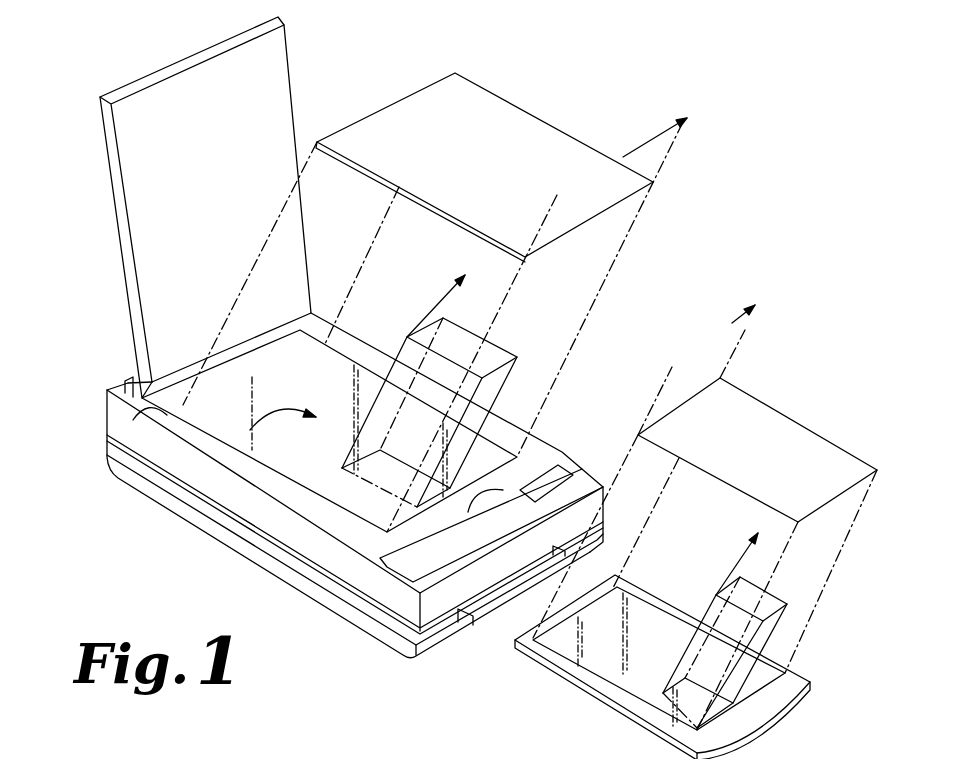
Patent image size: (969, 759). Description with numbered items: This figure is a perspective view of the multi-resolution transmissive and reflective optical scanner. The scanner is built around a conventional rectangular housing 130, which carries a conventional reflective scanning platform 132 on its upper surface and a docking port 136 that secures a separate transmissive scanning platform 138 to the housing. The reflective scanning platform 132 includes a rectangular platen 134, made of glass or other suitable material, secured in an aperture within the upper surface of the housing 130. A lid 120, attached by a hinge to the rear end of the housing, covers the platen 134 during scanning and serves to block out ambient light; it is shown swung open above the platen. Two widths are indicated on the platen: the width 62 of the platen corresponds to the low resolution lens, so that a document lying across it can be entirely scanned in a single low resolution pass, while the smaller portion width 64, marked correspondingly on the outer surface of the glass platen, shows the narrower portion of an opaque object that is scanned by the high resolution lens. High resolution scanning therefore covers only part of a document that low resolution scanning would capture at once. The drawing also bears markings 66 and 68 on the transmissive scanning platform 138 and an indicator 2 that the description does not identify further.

The lid 120 is at (277, 62).
The width of the platen 62 is at (557, 195).
The portion width 64 is at (436, 291).
The housing 130 is at (583, 364).
The cover plate 66 is at (672, 364).
The second block 68 is at (743, 549).
The reflective scanning platform 132 is at (142, 398).
The platen 134 is at (253, 400).
The docking port 136 is at (562, 550).
The transmissive scanning platform 138 is at (610, 710).
The section line 2- 2 is at (97, 328).